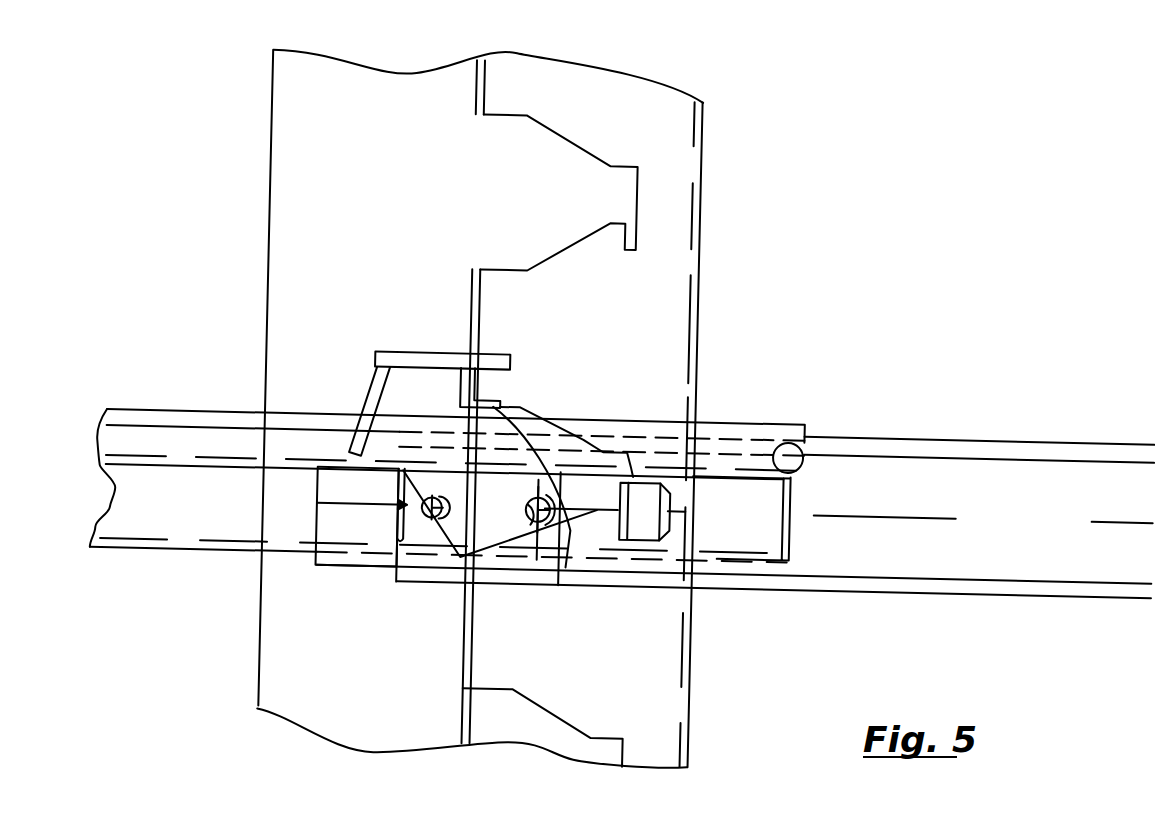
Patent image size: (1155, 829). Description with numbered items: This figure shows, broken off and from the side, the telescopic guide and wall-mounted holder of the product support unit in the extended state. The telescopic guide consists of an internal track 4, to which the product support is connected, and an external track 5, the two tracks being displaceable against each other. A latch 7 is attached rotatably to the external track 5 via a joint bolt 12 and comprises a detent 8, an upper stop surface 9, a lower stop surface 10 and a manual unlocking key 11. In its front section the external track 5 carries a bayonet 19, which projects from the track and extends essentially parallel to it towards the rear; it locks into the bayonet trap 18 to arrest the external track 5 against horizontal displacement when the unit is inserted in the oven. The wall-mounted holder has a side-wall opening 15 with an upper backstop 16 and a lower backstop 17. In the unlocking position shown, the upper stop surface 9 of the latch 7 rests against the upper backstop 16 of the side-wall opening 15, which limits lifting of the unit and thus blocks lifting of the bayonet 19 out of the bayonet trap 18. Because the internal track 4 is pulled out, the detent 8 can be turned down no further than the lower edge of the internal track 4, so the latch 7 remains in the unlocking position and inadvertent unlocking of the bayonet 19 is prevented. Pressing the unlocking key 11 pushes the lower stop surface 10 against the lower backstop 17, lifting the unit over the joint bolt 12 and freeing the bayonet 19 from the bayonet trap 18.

The internal track 4 is at (227, 499).
The external track 5 is at (890, 499).
The latch 7 is at (407, 386).
The detent 8 is at (363, 401).
The upper stop surface 9 is at (500, 394).
The lower stop surface 10 is at (460, 552).
The manual unlocking key 11 is at (424, 353).
The joint bolt 12 is at (550, 533).
The side-wall opening 15 is at (572, 166).
The upper backstop 16 is at (496, 109).
The lower backstop 17 is at (505, 249).
The bayonet trap 18 is at (633, 232).
The bayonet 19 is at (662, 474).